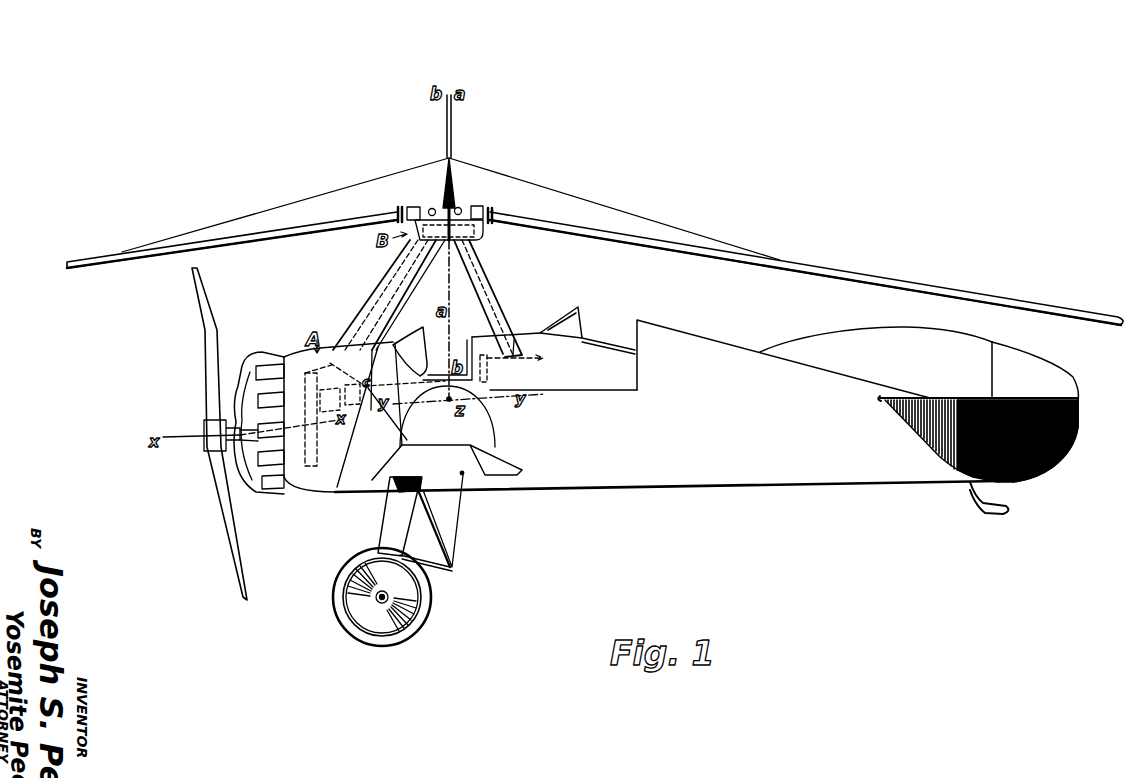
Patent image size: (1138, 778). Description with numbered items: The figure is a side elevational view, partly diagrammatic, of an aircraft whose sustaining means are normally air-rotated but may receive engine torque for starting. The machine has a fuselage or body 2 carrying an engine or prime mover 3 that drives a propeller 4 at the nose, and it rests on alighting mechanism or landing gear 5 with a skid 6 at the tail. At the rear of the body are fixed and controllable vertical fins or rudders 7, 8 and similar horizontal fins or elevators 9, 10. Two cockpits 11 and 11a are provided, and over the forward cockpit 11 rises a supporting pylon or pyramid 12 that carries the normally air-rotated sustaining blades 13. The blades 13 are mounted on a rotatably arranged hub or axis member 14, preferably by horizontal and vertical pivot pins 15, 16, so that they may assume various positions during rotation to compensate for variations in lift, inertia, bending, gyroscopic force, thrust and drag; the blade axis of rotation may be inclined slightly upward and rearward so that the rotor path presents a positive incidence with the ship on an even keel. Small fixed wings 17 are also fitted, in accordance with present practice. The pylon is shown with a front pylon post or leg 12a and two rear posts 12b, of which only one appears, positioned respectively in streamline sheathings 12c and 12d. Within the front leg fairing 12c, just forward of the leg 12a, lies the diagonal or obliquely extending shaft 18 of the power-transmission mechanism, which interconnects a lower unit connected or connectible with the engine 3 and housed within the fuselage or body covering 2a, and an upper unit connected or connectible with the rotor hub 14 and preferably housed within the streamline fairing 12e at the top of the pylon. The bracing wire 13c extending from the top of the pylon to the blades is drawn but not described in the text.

The fuselage or body 2 is at (667, 406).
The fuselage or body covering 2a is at (300, 356).
The engine or prime mover 3 is at (259, 410).
The propeller 4 is at (192, 315).
The alighting mechanism or landing gear 5 is at (398, 560).
The skid 6 is at (987, 513).
The fixed vertical fin 7 is at (876, 351).
The controllable vertical fin or rudder 8 is at (981, 412).
The horizontal fin 9 is at (880, 401).
The horizontal fin or elevator 10 is at (1067, 392).
The forward cockpit 11 is at (423, 351).
The cockpit 11a is at (583, 322).
The supporting pylon or pyramid 12 is at (412, 295).
The front pylon post or leg 12a is at (386, 314).
The rear pylon post 12b is at (507, 313).
The front leg streamline sheathing or fairing 12c is at (381, 268).
The rear post streamline sheathing 12d is at (486, 273).
The streamline fairing 12e is at (487, 238).
The sustaining means or blades 13 is at (907, 276).
The rotor bracing wire 13c is at (577, 197).
The hub or axis member 14 is at (440, 208).
The horizontal pivot pin 15 is at (460, 210).
The vertical pivot pin 16 is at (475, 212).
The small fixed wing 17 is at (462, 472).
The diagonal or obliquely-extending shaft 18 is at (362, 299).